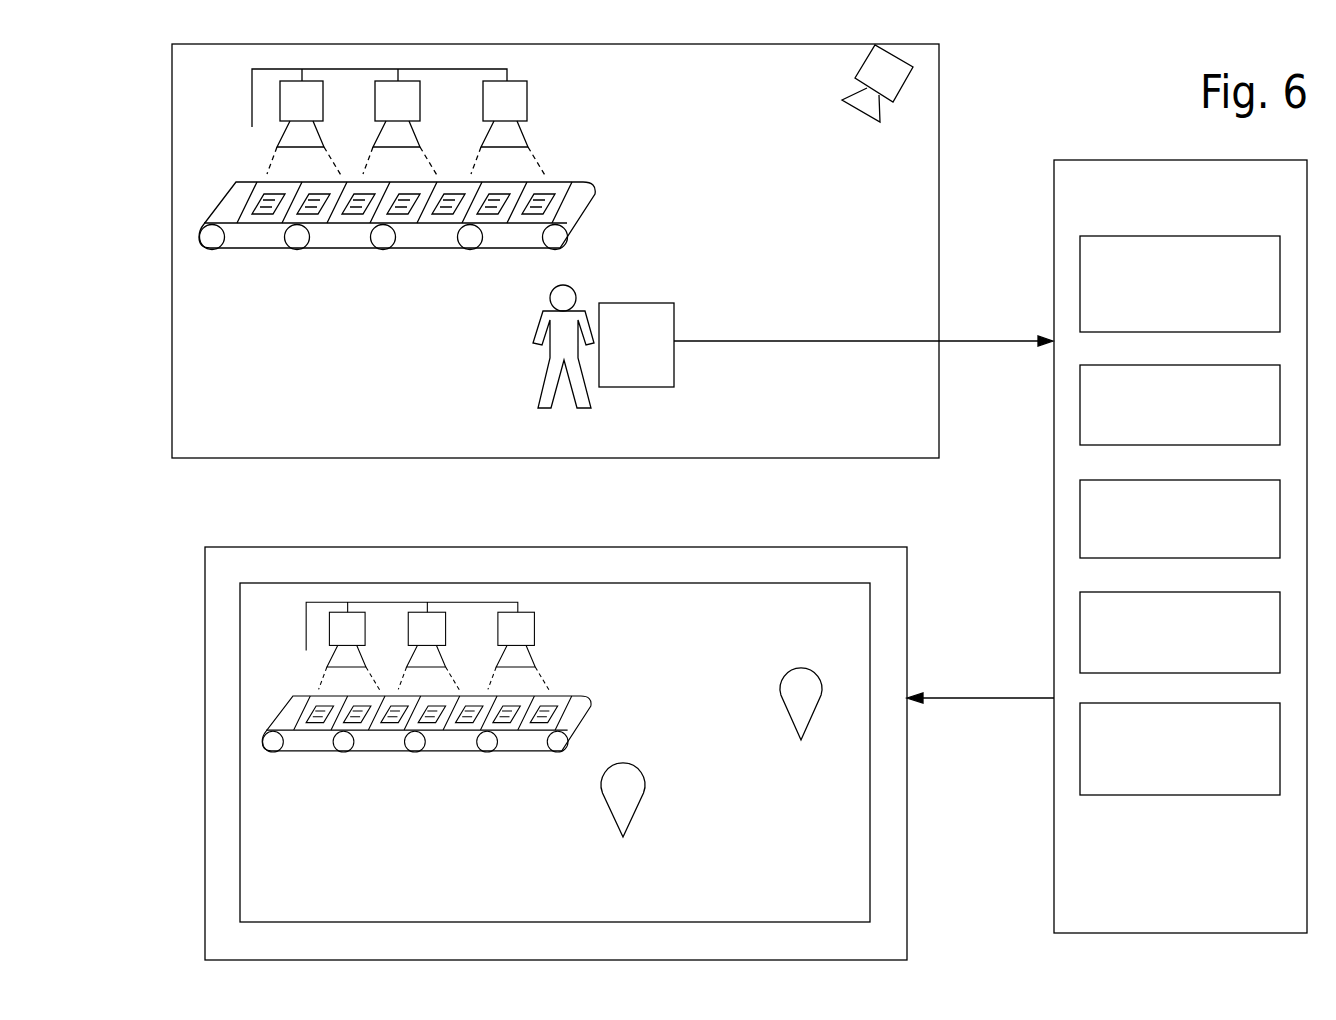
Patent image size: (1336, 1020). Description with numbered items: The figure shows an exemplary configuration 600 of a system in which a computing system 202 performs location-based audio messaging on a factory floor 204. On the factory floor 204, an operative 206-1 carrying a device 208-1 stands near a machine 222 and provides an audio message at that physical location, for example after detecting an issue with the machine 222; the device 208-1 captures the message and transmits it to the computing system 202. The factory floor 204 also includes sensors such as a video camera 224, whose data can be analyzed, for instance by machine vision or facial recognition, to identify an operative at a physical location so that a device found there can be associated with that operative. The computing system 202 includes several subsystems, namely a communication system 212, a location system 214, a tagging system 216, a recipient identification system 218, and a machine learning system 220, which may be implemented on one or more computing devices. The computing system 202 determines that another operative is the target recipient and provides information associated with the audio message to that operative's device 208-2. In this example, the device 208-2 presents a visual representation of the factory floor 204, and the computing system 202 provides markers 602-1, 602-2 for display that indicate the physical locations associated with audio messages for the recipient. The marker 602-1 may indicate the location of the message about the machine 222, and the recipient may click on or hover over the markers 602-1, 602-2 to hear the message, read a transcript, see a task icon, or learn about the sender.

The configuration 600 is at (574, 251).
The factory floor 204 is at (939, 257).
The machine 222 is at (527, 110).
The video camera 224 is at (912, 77).
The operative 206-1 is at (548, 353).
The device 208-1 is at (636, 345).
The device 208-2 is at (620, 753).
The marker 602-1 is at (645, 785).
The marker 602-2 is at (787, 713).
The computing system 202 is at (1180, 546).
The communication system 212 is at (1180, 284).
The location system 214 is at (1180, 405).
The tagging system 216 is at (1180, 519).
The recipient identification (ID) system 218 is at (1180, 632).
The machine learning system 220 is at (1180, 749).